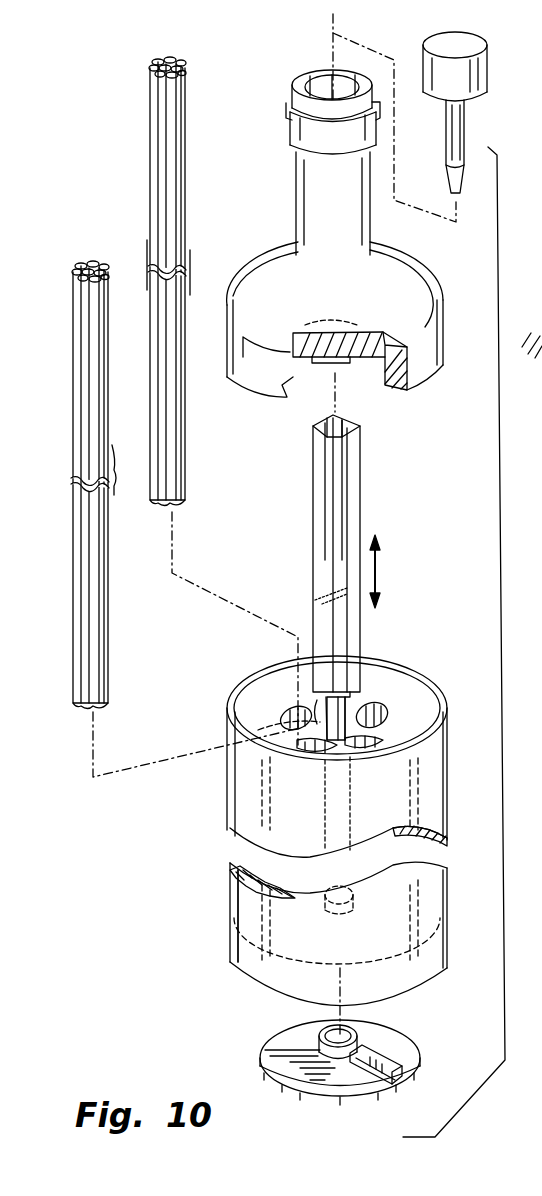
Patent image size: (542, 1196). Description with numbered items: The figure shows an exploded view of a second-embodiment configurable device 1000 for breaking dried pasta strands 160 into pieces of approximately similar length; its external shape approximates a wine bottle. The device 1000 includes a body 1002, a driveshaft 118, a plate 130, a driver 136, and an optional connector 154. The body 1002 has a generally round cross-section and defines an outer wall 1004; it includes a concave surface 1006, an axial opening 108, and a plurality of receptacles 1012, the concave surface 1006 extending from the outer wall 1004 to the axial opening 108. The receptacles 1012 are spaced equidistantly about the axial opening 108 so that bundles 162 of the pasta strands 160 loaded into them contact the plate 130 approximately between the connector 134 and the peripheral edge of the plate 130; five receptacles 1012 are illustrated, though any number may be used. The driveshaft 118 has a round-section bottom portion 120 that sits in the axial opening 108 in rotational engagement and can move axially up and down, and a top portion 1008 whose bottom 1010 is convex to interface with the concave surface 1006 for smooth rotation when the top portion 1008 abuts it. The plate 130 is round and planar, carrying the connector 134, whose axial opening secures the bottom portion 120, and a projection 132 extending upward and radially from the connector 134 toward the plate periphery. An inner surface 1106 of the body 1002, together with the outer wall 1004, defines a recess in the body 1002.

The configurable device 1000 is at (238, 102).
The dried pasta strands 160 is at (157, 125).
The bundles 162 is at (138, 260).
The driver 136 is at (253, 246).
The connector 154 is at (418, 74).
The top portion 1008 is at (313, 548).
The driveshaft 118 is at (306, 596).
The bottom 1010 is at (360, 700).
The bottom portion 120 is at (343, 707).
The receptacles 1012 is at (377, 713).
The concave surface 1006 is at (262, 692).
The outer wall 1004 is at (230, 708).
The body 1002 is at (215, 870).
The axial opening 108 is at (326, 902).
The inner surface 1106 is at (228, 948).
The plate 130 is at (252, 1057).
The projection 132 is at (385, 1062).
The connector 134 is at (338, 1052).